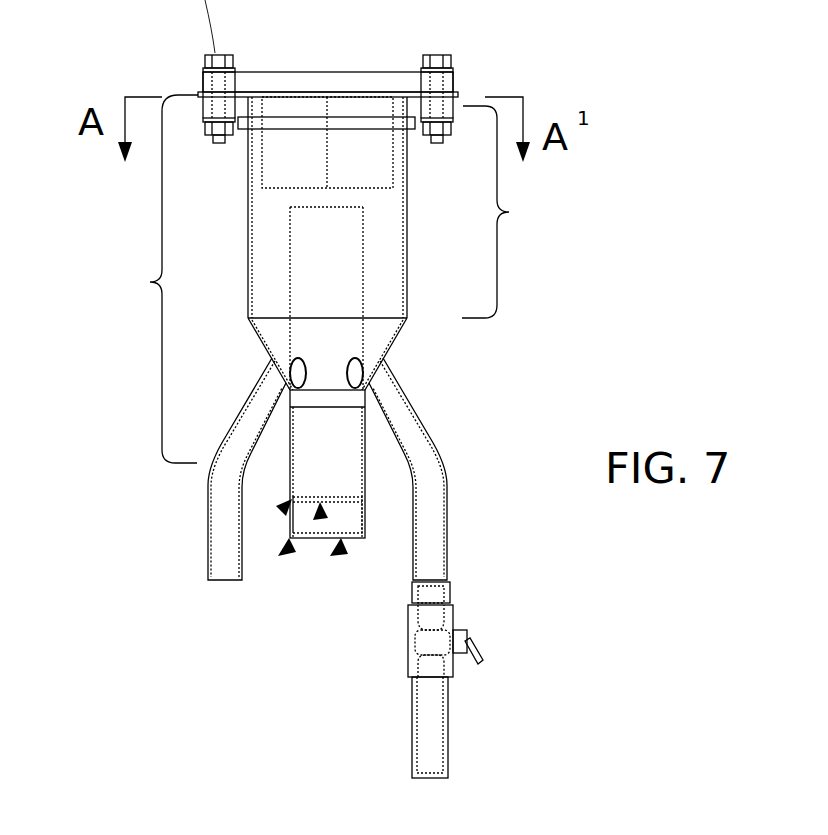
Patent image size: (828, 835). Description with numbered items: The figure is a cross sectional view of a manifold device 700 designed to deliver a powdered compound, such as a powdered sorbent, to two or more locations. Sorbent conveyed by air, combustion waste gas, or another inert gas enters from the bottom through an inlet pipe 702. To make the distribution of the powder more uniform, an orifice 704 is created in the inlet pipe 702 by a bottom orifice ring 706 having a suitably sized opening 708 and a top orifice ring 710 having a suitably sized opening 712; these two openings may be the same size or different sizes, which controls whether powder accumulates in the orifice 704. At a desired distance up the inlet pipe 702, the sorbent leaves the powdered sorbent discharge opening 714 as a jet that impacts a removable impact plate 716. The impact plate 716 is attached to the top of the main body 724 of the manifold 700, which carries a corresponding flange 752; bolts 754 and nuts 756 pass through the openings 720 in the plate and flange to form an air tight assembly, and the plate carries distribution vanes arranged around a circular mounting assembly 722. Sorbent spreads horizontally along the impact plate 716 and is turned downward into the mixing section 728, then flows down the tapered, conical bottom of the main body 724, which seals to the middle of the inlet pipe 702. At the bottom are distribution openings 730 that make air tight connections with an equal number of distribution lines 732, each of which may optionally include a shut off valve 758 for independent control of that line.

The manifold device 700 is at (180, 42).
The inlet pipe 702 is at (367, 460).
The orifice 704 is at (353, 515).
The bottom orifice ring 706 is at (288, 553).
The opening 708 is at (337, 556).
The top orifice ring 710 is at (284, 507).
The opening 712 is at (320, 517).
The powdered sorbent discharge opening 714 is at (362, 208).
The removable impact plate 716 is at (456, 82).
The openings 720 is at (219, 88).
The circular mounting assembly 722 is at (448, 52).
The main body 724 is at (149, 279).
The mixing section 728 is at (510, 212).
The distribution openings 730 is at (295, 362).
The distribution lines 732 is at (207, 520).
The flange 752 is at (459, 98).
The bolts 754 is at (446, 54).
The nuts 756 is at (228, 137).
The shut off valve 758 is at (478, 600).